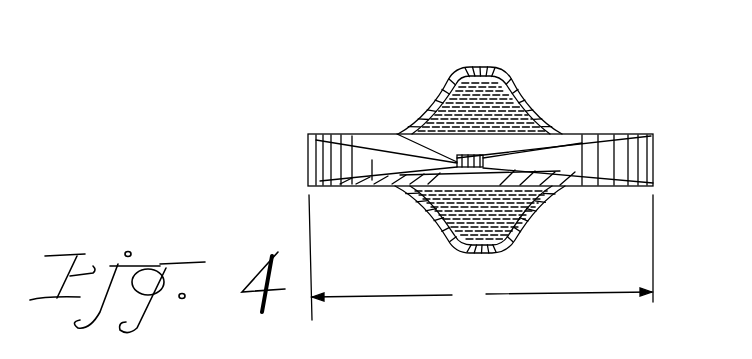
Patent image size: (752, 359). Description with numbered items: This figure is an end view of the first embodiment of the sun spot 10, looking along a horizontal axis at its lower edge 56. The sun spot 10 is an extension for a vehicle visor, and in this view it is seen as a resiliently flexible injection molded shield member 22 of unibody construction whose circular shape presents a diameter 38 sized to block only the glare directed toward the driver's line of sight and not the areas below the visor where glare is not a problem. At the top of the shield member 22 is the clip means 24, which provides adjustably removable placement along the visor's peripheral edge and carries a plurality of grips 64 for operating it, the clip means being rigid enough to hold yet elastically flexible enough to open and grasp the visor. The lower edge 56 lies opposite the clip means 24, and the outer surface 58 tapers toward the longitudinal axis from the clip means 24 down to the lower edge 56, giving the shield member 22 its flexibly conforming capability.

The sun spot 10 is at (368, 42).
The resiliently flexible injection molded shield member 22 is at (654, 163).
The clip means 24 is at (523, 98).
The diameter 38 is at (481, 257).
The lower edge 56 is at (450, 163).
The outer surface 58 is at (380, 142).
The grips 64 is at (440, 97).